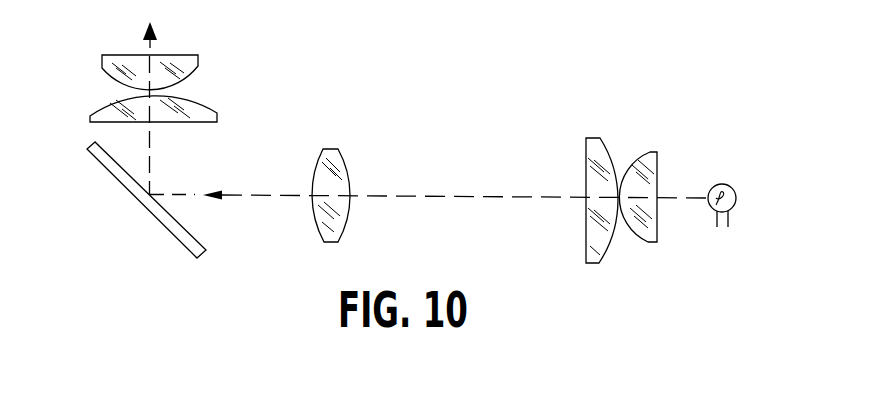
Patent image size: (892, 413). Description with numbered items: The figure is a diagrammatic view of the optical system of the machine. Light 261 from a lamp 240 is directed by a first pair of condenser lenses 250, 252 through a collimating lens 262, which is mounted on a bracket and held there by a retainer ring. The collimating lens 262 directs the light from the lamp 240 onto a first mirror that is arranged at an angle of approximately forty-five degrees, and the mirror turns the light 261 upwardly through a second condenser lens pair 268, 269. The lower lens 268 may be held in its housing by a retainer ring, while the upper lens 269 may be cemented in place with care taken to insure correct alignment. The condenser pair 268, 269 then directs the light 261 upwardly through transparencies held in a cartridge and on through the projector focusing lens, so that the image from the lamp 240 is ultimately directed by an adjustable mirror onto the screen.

The lamp 240 is at (735, 187).
The condenser lens 250 is at (650, 152).
The condenser lens 252 is at (595, 138).
The light 261 is at (443, 195).
The collimating lens 262 is at (333, 240).
The second condenser lens 268 is at (197, 117).
The upper condenser lens 269 is at (182, 67).